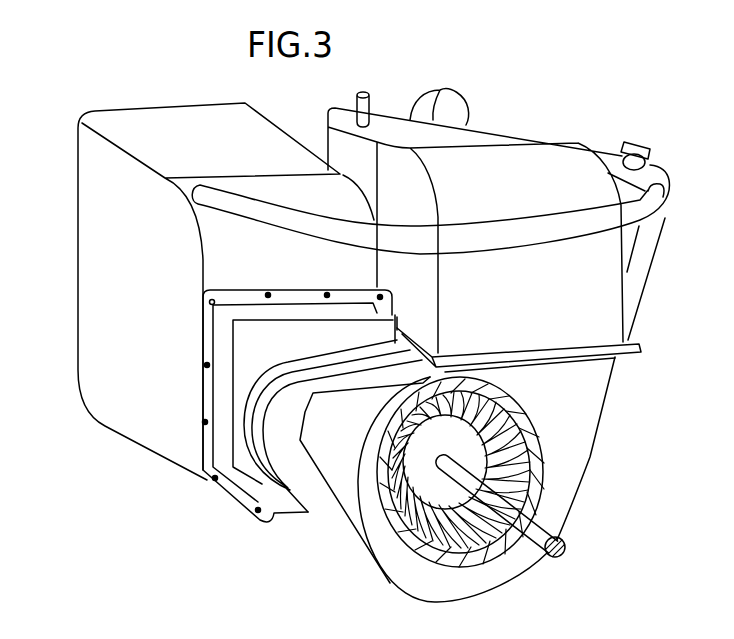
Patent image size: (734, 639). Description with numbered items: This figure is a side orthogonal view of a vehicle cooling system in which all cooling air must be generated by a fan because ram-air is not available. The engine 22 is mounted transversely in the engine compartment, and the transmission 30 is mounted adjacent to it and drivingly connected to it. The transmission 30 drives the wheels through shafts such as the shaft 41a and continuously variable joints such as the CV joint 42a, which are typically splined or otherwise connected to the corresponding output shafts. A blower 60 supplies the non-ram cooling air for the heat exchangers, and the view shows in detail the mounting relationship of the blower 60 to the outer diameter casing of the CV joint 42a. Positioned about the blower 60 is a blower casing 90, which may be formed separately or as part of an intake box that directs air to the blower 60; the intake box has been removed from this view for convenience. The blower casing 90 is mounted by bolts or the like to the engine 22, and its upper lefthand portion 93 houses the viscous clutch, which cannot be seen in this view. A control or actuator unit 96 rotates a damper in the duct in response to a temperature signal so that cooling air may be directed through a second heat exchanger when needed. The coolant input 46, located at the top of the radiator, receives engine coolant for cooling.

The engine 22 is at (88, 263).
The transmission 30 is at (358, 185).
The control or actuator unit 96 is at (367, 97).
The coolant input 46 is at (644, 214).
The upper lefthand portion of the blower casing 93 is at (245, 358).
The blower casing 90 is at (593, 393).
The blower 60 is at (387, 508).
The continuously variable (CV) joint 42a is at (505, 448).
The shaft 41a is at (543, 557).